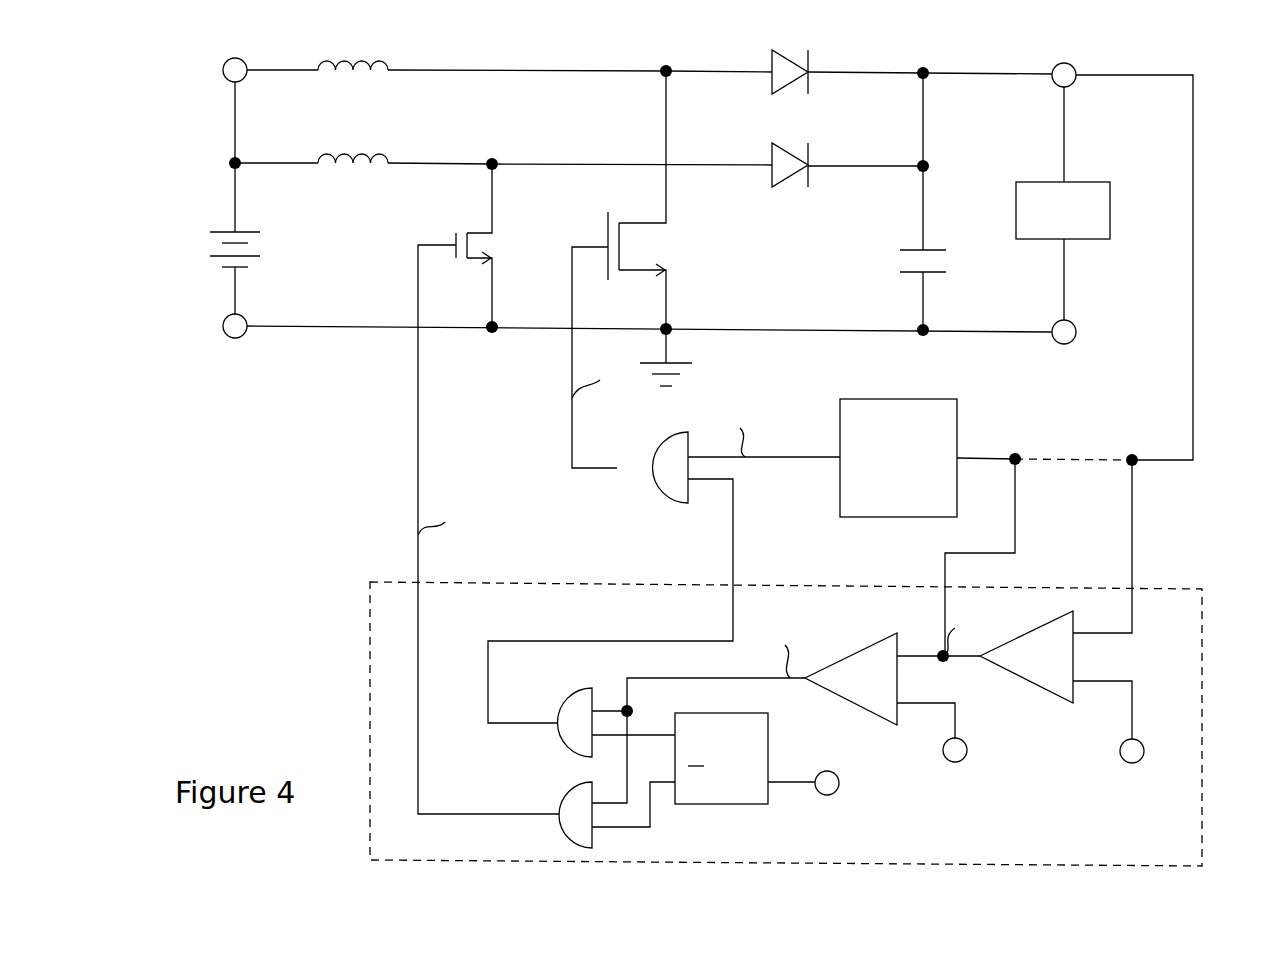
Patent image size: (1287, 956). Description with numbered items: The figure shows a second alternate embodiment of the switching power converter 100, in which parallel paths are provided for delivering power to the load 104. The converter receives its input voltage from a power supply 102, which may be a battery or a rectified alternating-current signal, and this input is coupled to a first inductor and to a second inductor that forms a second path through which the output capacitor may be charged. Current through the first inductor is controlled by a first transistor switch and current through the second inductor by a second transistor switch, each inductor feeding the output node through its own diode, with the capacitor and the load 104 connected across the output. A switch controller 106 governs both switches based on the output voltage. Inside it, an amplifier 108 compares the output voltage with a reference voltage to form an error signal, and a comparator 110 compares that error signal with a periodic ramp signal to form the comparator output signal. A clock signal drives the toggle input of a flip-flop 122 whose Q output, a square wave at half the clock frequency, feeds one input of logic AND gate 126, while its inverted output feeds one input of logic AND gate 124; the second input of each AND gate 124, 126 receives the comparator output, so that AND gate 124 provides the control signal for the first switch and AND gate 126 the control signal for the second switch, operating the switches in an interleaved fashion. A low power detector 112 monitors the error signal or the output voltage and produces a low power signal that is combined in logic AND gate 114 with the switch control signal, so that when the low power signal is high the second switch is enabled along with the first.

The switching power converter 100 is at (318, 492).
The power supply 102 is at (222, 232).
The load 104 is at (1083, 182).
The switch controller 106 is at (1207, 627).
The amplifier 108 is at (1068, 703).
The comparator 110 is at (851, 706).
The low power detector 112 is at (958, 425).
The logic AND gate 114 is at (636, 503).
The flip-flop 122 is at (732, 804).
The logic AND gate 124 is at (520, 832).
The logic AND gate 126 is at (525, 738).